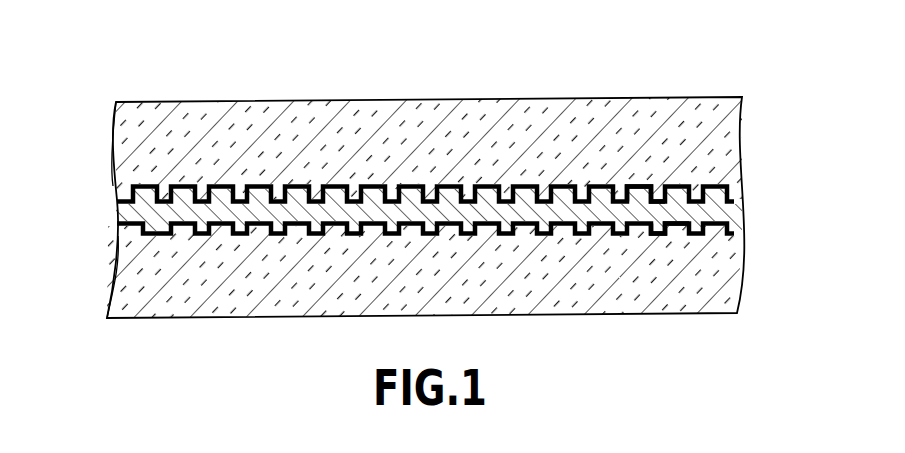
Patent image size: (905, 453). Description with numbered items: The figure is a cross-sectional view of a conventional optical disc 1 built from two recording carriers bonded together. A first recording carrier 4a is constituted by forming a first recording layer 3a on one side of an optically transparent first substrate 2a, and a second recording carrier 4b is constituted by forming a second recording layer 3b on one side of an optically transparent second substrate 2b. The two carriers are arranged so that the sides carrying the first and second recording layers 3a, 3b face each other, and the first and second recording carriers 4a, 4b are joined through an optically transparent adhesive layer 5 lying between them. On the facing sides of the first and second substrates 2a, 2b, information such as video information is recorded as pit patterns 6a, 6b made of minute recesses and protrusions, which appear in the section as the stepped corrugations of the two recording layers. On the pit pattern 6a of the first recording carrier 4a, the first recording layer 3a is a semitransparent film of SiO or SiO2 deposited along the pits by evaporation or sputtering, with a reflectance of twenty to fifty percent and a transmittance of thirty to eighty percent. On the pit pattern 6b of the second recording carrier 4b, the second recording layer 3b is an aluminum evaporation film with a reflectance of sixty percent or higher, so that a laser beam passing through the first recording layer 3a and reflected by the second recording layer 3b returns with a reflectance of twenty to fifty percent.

The optical disc 1 is at (641, 82).
The first substrate 2a is at (718, 297).
The second substrate 2b is at (725, 117).
The first recording layer 3a is at (736, 232).
The second recording layer 3b is at (722, 183).
The first recording carrier 4a is at (118, 273).
The second recording carrier 4b is at (118, 150).
The adhesive layer 5 is at (728, 207).
The pit pattern 6a is at (657, 228).
The pit pattern 6b is at (652, 184).